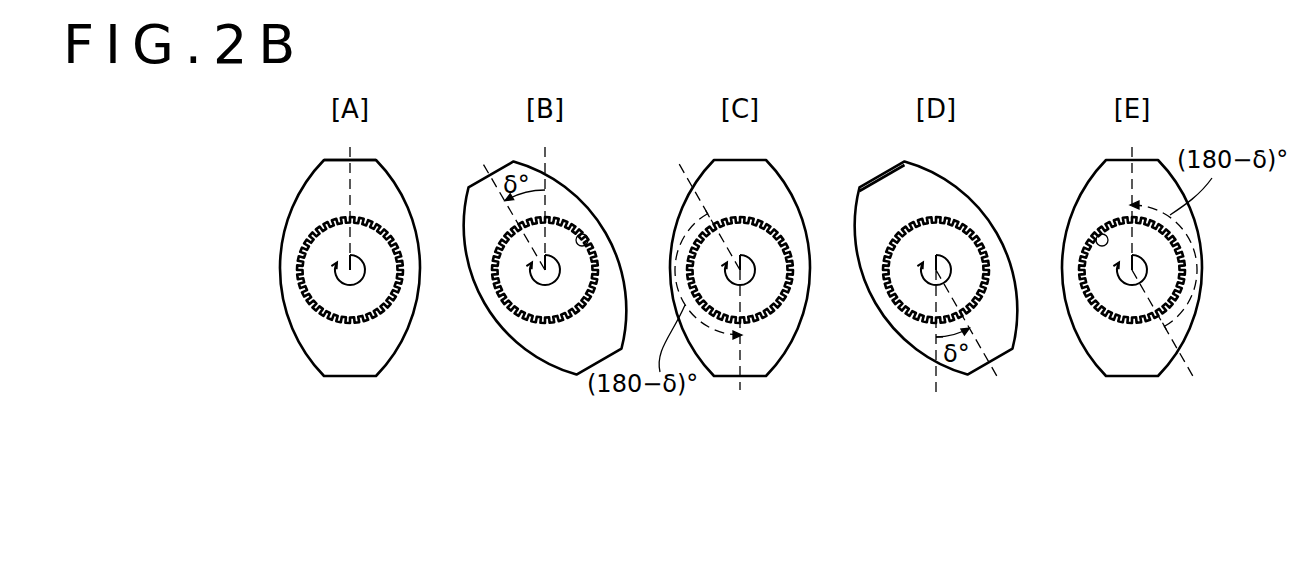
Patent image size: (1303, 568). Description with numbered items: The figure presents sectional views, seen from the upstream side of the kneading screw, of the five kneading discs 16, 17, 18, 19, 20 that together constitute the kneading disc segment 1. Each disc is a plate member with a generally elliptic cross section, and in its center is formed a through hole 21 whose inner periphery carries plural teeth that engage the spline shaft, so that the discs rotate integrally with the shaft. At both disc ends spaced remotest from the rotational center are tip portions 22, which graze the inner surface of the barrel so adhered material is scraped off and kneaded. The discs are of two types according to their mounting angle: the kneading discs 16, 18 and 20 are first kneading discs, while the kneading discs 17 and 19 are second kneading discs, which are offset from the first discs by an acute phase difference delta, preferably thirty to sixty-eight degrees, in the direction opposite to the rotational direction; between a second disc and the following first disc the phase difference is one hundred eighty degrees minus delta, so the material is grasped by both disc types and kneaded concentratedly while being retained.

The kneading disc segment 1 is at (792, 0).
The kneading disc 16 is at (352, 363).
The kneading disc 17 is at (560, 360).
The kneading disc 18 is at (753, 363).
The kneading disc 19 is at (952, 372).
The kneading disc 20 is at (1132, 367).
The through hole 21 is at (583, 234).
The tip portion 22 is at (364, 161).